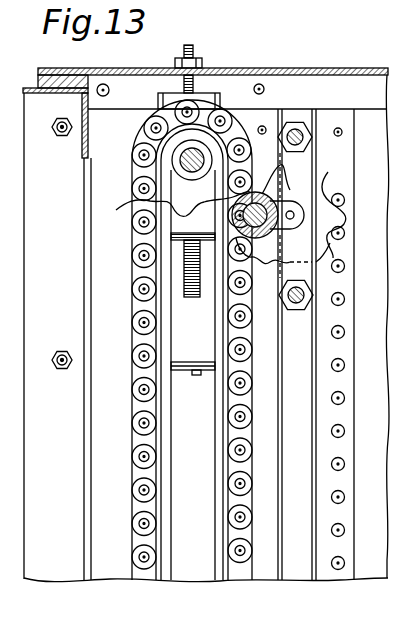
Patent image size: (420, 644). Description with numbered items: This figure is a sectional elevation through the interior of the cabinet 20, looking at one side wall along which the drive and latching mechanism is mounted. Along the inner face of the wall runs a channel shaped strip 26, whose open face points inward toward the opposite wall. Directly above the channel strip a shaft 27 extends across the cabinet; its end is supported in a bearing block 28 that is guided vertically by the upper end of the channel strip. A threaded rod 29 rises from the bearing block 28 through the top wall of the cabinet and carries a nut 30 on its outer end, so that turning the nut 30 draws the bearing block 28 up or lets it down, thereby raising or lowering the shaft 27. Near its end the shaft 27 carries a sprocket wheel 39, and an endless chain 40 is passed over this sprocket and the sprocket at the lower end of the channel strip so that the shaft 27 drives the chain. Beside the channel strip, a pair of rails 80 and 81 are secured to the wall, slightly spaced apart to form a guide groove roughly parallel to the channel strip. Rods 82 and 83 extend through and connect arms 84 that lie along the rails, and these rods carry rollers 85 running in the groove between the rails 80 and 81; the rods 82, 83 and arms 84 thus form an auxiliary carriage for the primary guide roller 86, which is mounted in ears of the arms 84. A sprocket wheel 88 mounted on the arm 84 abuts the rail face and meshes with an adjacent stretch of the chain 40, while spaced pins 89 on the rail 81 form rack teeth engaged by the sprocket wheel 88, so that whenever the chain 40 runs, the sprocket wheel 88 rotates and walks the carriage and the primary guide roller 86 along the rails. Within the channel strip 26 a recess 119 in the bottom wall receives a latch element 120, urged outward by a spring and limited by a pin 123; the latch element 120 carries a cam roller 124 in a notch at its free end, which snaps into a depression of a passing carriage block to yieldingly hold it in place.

The cabinet 20 is at (363, 69).
The threaded rod 29 is at (191, 46).
The nut 30 is at (201, 62).
The bearing block 28 is at (208, 96).
The shaft 27 is at (189, 172).
The endless chain 40 is at (138, 312).
The channel shaped strip 26 is at (172, 505).
The pin 123 is at (175, 241).
The cam roller 124 is at (193, 298).
The latch element 120 is at (173, 362).
The recess 119 is at (198, 376).
The rail 80 is at (268, 110).
The rail 81 is at (352, 150).
The rod 83 is at (298, 136).
The roller 85 is at (301, 313).
The rod 82 is at (285, 302).
The primary guide roller 86 is at (284, 178).
The sprocket wheel 88 is at (314, 184).
The pin 89 is at (354, 222).
The sprocket wheel 39 is at (196, 195).
The arm 84 is at (315, 262).